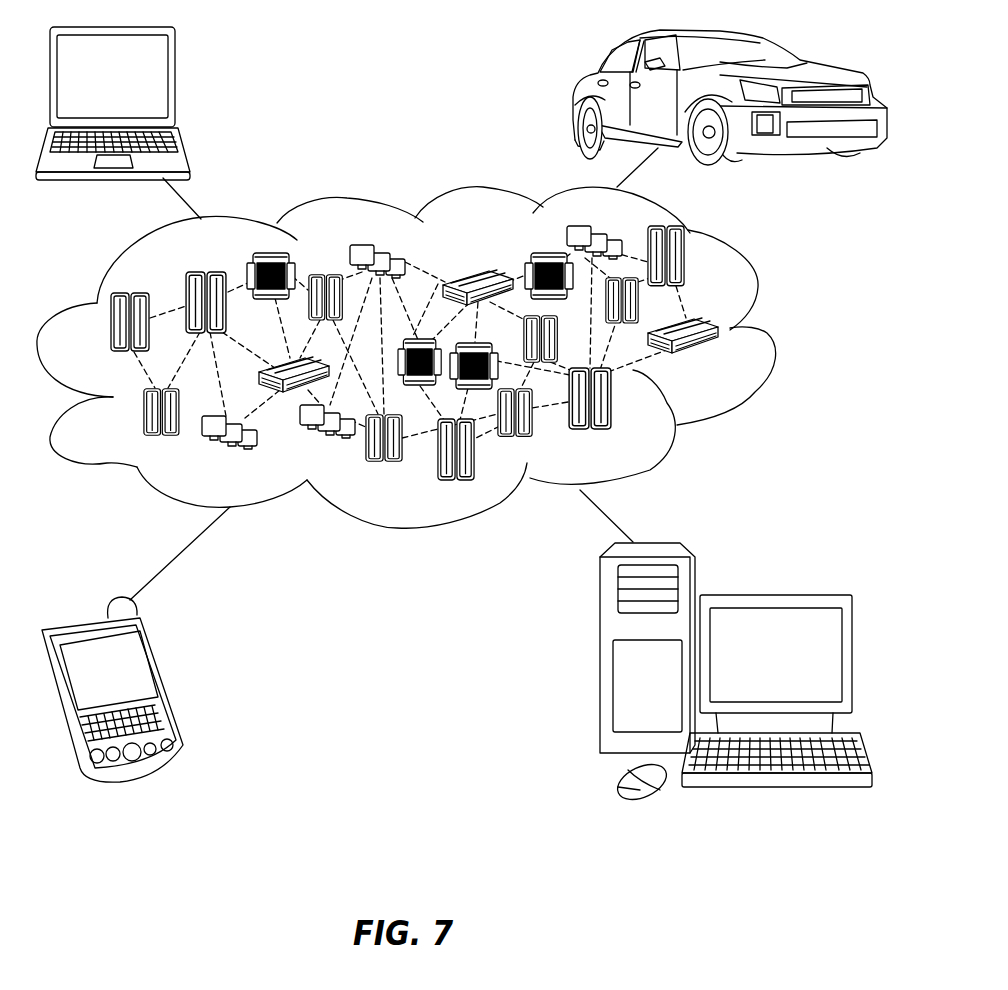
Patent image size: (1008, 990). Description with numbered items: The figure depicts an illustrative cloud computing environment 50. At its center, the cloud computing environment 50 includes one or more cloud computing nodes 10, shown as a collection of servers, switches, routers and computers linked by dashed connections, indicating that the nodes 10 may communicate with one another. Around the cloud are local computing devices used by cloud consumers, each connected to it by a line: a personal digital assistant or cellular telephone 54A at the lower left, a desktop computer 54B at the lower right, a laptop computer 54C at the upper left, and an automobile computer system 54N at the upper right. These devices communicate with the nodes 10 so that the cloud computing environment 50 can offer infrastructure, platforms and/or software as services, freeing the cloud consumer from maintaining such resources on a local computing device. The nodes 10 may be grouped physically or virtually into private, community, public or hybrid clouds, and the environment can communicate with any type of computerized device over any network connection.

The cloud computing nodes 10 is at (722, 359).
The cloud computing environment 50 is at (770, 330).
The personal digital assistant or cellular telephone 54A is at (167, 681).
The desktop computer 54B is at (772, 595).
The laptop computer 54C is at (178, 85).
The automobile computer system 54N is at (573, 98).